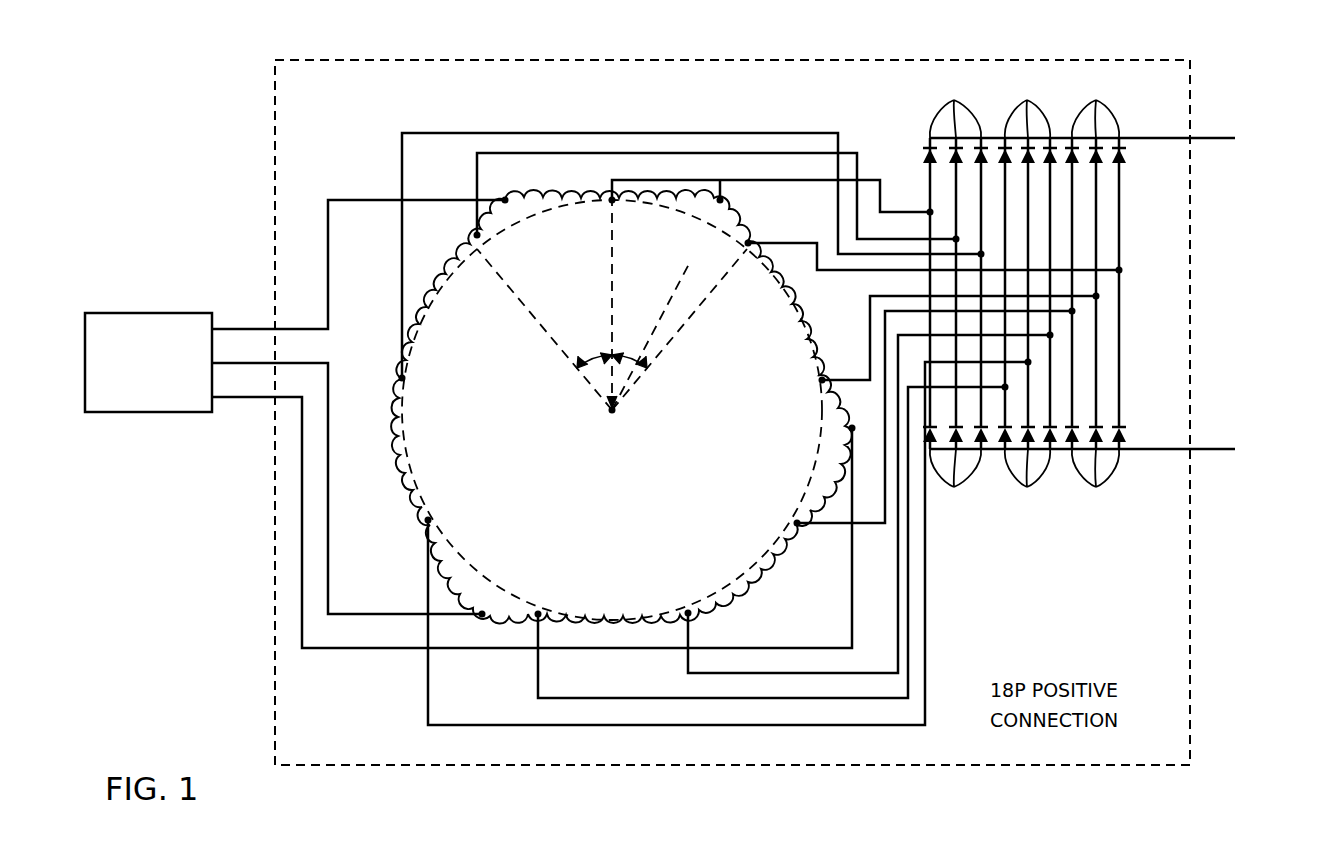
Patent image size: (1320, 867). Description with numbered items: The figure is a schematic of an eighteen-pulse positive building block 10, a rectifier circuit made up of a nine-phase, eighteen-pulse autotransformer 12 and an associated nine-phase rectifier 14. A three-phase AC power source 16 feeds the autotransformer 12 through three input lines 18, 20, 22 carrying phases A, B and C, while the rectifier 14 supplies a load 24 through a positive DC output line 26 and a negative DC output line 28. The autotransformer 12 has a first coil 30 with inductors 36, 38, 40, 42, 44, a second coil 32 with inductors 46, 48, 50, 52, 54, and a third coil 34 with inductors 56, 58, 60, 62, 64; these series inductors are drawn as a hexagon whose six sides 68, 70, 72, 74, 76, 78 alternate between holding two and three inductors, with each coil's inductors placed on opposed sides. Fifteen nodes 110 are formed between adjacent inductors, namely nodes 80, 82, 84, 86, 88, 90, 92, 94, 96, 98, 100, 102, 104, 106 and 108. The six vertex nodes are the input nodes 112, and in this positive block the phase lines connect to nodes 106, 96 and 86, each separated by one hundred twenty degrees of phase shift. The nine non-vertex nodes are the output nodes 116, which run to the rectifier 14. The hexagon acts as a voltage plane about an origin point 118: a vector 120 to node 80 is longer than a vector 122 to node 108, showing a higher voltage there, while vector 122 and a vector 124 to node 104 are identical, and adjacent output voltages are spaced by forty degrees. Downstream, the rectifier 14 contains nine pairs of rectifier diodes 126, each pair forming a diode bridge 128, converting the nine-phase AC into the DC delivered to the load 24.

The 18-pulse positive building block 10 is at (318, 58).
The autotransformer 12 is at (728, 406).
The rectifier 14 is at (1081, 337).
The three-phase AC power source 16 is at (170, 313).
The input line 18 is at (255, 329).
The input line 20 is at (298, 362).
The input line 22 is at (242, 402).
The load 24 is at (1263, 299).
The positive DC output line 26 is at (1226, 134).
The negative DC output line 28 is at (1226, 445).
The first coil 30 is at (588, 166).
The second coil 32 is at (801, 238).
The third coil 34 is at (488, 310).
The inductor 36 is at (562, 208).
The inductor 38 is at (664, 205).
The inductor 40 is at (644, 470).
The inductor 42 is at (600, 612).
The inductor 44 is at (512, 609).
The inductor 46 is at (740, 220).
The inductor 48 is at (782, 290).
The inductor 50 is at (822, 392).
The inductor 52 is at (456, 560).
The inductor 54 is at (405, 472).
The inductor 56 is at (818, 458).
The inductor 58 is at (769, 580).
The inductor 60 is at (408, 394).
The inductor 62 is at (441, 312).
The inductor 64 is at (494, 230).
The side of the hexagon 68 is at (602, 208).
The side of the hexagon 70 is at (662, 608).
The side of the hexagon 72 is at (816, 371).
The side of the hexagon 74 is at (429, 516).
The side of the hexagon 76 is at (785, 525).
The side of the hexagon 78 is at (403, 379).
The node 80 is at (722, 182).
The node 82 is at (750, 244).
The node 84 is at (826, 378).
The node 86 is at (853, 428).
The node 88 is at (797, 536).
The node 90 is at (770, 608).
The node 92 is at (688, 618).
The node 94 is at (538, 618).
The node 96 is at (482, 620).
The node 98 is at (425, 526).
The node 100 is at (372, 432).
The node 102 is at (400, 376).
The node 104 is at (477, 240).
The node 106 is at (497, 195).
The node 108 is at (613, 181).
The nodes 110 is at (480, 617).
The input nodes 112 is at (756, 622).
The output nodes 116 is at (541, 622).
The origin point 118 is at (610, 416).
The vector 120 is at (662, 322).
The vector 122 is at (612, 310).
The vector 124 is at (566, 322).
The rectifier diodes 126 is at (1024, 296).
The diode bridge 128 is at (1160, 242).